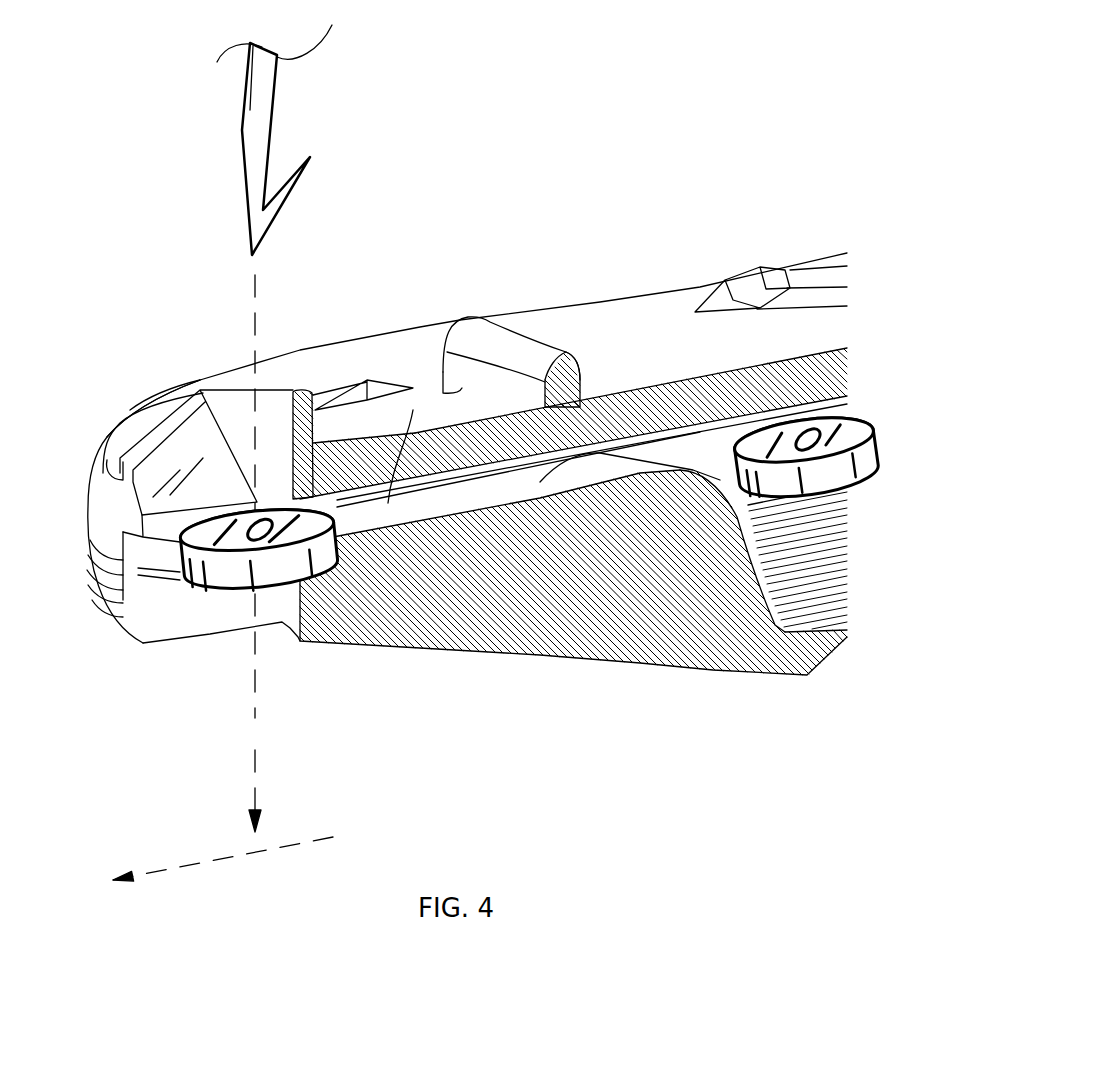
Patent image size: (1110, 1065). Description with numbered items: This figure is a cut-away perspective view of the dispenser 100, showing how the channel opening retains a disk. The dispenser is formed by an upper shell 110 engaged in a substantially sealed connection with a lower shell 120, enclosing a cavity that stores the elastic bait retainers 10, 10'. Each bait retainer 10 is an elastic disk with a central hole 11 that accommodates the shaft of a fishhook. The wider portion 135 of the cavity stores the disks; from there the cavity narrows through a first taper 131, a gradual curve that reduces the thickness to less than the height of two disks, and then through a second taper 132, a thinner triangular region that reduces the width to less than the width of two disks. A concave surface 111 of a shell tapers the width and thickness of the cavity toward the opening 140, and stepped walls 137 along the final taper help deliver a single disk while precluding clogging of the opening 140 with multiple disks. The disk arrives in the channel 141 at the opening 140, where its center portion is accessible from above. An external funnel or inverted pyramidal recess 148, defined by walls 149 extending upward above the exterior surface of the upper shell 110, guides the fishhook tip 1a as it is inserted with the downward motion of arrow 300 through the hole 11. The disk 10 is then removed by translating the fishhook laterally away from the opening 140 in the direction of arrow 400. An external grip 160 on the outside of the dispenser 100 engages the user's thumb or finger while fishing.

The container 100 is at (685, 190).
The upper shell 110 is at (470, 240).
The lower shell 120 is at (472, 763).
The external grip 160 is at (520, 317).
The stepped walls 137 is at (413, 410).
The first taper 131 is at (800, 370).
The second taper 132 is at (402, 567).
The wider portion 135 is at (753, 543).
The concave surface 111 is at (790, 563).
The opening 140 is at (138, 567).
The channel 141 is at (152, 572).
The inverted pyramidal recess 148 is at (190, 457).
The walls 149 is at (232, 385).
The hole 11 is at (283, 601).
The bait retainer 10 is at (286, 598).
The bait retainer 10' is at (806, 430).
The fishhook tip 1a is at (252, 160).
The arrow 300 is at (255, 553).
The arrow 400 is at (223, 859).